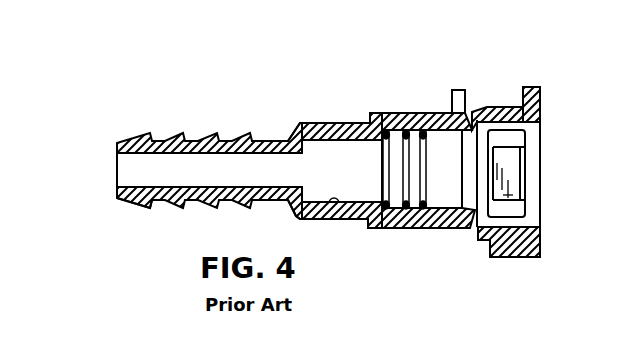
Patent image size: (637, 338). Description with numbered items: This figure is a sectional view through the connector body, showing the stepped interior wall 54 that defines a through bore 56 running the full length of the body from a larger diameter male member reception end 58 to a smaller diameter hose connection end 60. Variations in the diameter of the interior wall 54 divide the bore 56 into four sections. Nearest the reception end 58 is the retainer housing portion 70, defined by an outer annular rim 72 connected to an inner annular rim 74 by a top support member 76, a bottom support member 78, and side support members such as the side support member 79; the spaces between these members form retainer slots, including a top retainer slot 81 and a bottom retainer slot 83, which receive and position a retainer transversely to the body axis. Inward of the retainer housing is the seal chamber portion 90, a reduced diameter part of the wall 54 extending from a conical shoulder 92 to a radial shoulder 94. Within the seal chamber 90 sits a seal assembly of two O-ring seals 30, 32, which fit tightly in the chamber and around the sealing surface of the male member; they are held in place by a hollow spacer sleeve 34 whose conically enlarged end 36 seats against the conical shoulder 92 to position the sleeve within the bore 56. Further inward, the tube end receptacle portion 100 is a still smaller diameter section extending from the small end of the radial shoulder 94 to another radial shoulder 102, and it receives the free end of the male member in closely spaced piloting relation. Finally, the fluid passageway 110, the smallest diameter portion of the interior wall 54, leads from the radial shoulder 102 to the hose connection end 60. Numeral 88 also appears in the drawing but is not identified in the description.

The O-ring seal 30 is at (392, 228).
The O-ring seal 32 is at (420, 118).
The spacer sleeve 34 is at (438, 233).
The conically enlarged end 36 is at (473, 233).
The interior wall 54 is at (337, 144).
The through bore 56 is at (209, 171).
The male member reception end 58 is at (542, 162).
The hose connection end 60 is at (116, 184).
The retainer housing portion 70 is at (543, 123).
The outer annular rim 72 is at (537, 90).
The inner annular rim 74 is at (472, 110).
The top support member 76 is at (514, 105).
The bottom support member 78 is at (510, 260).
The side support member 79 is at (512, 181).
The top retainer slot 81 is at (508, 138).
The bottom retainer slot 83 is at (515, 208).
The O-ring seals 88 is at (456, 108).
The seal chamber portion 90 is at (419, 169).
The conical shoulder 92 is at (487, 105).
The radial shoulder 94 is at (393, 118).
The tube end receptacle portion 100 is at (338, 208).
The radial shoulder 102 is at (309, 138).
The fluid passageway 110 is at (128, 168).